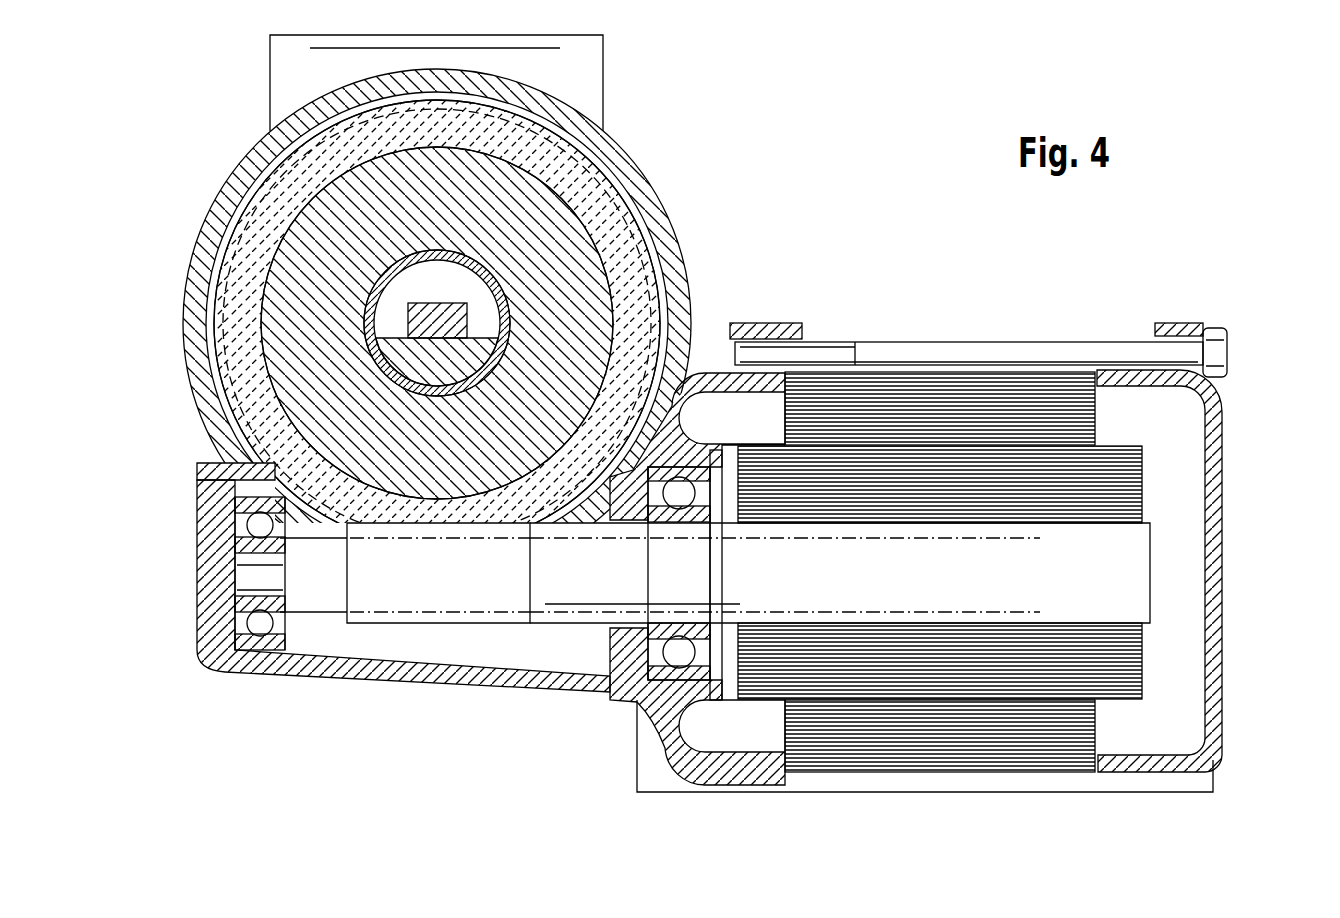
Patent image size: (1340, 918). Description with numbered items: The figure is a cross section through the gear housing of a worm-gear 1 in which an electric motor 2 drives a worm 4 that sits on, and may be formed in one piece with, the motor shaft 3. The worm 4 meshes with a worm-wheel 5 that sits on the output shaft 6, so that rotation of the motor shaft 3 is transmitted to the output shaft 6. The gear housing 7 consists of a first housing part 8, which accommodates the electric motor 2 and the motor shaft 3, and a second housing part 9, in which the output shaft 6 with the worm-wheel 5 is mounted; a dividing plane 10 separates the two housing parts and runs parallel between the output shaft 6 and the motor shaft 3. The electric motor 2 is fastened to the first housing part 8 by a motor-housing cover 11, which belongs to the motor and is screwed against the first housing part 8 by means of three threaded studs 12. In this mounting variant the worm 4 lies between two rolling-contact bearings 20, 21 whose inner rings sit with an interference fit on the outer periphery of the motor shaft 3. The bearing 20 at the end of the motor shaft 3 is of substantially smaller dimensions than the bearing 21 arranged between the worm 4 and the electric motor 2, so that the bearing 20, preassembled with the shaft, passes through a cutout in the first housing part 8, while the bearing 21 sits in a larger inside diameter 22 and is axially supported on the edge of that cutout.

The worm-gear 1 is at (740, 259).
The electric motor 2 is at (947, 480).
The motor shaft 3 is at (573, 583).
The worm 4 is at (392, 595).
The worm-wheel 5 is at (605, 237).
The output shaft 6 is at (400, 300).
The gear housing 7 is at (197, 590).
The first housing part 8 is at (217, 519).
The second housing part 9 is at (617, 160).
The dividing plane 10 is at (198, 463).
The motor-housing cover 11 is at (1222, 468).
The threaded stud 12 is at (1120, 342).
The rolling-contact bearing 20 is at (255, 640).
The rolling-contact bearing 21 is at (640, 683).
The larger inside diameter 22 is at (652, 735).